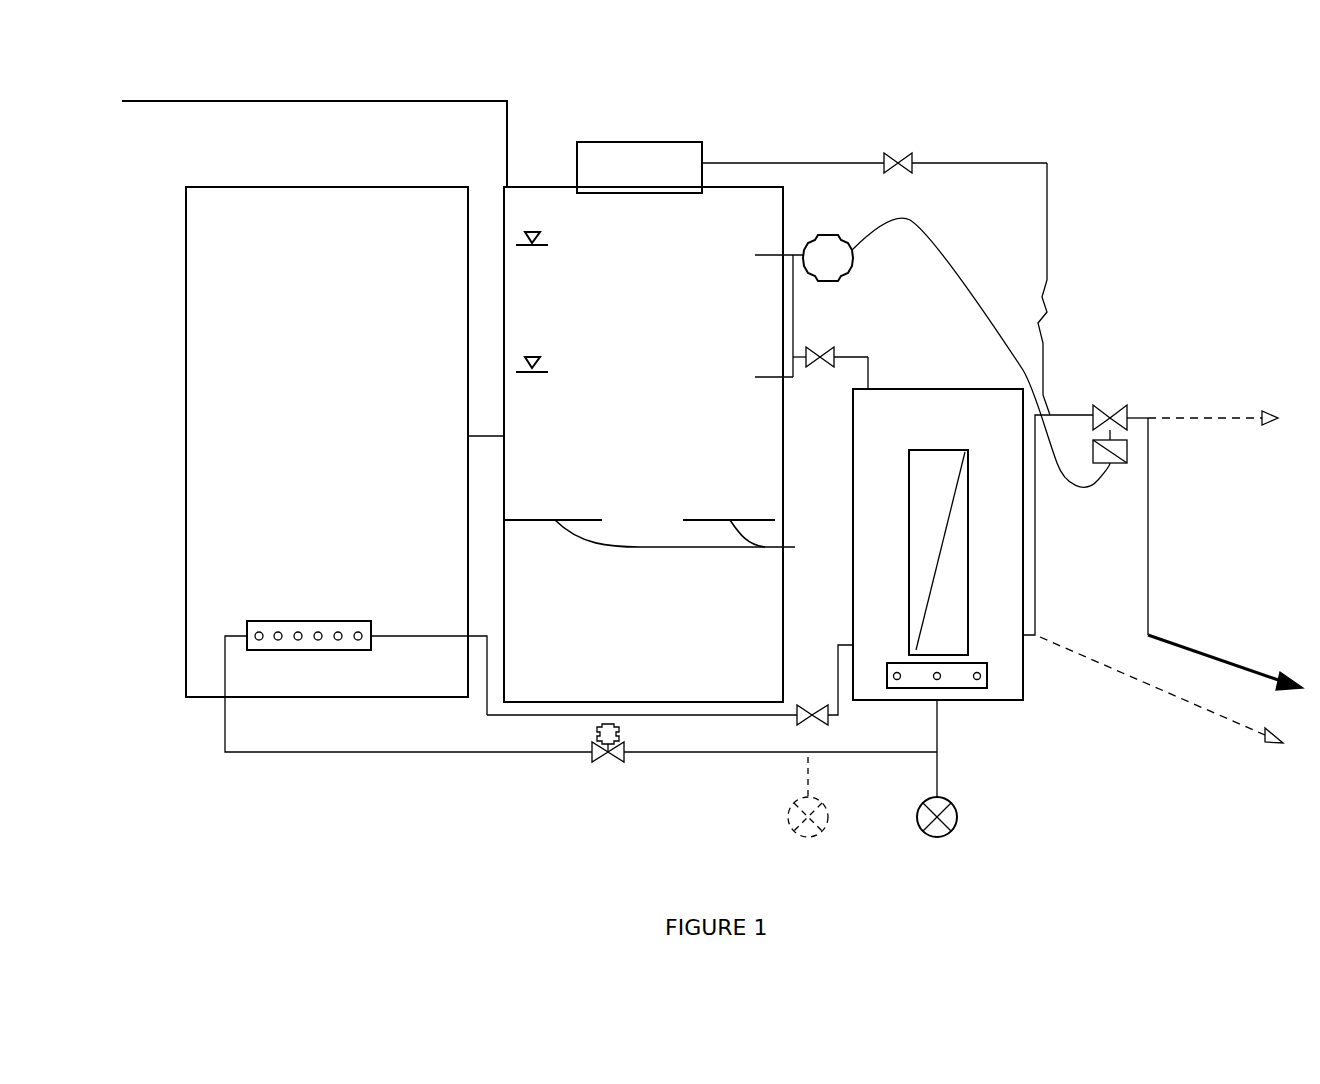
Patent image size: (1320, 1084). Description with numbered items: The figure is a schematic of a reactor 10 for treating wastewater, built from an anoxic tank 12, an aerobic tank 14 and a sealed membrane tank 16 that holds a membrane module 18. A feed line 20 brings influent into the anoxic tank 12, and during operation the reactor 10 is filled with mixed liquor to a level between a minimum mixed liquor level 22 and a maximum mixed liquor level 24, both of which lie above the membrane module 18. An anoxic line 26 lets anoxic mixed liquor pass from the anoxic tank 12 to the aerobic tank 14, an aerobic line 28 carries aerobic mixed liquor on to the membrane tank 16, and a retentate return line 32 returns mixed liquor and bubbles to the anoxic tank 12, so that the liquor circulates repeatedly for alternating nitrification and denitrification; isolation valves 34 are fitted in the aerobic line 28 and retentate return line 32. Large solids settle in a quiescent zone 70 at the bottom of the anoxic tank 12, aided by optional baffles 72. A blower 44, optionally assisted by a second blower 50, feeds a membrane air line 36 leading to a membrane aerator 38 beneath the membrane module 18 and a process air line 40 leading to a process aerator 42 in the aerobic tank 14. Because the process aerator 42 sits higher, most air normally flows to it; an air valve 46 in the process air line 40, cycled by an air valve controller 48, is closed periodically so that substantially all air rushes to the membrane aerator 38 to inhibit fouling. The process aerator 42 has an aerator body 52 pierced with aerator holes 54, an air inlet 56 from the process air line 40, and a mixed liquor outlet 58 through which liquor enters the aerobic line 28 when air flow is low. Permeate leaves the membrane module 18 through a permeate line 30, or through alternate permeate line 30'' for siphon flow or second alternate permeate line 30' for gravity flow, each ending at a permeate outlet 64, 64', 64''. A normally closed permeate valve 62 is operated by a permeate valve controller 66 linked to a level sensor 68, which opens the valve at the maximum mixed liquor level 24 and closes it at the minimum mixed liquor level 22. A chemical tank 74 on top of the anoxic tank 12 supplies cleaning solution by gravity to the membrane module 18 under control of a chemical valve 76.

The reactor 10 is at (218, 812).
The anoxic tank 12 is at (643, 444).
The aerobic tank 14 is at (327, 442).
The membrane tank 16 is at (938, 544).
The membrane module 18 is at (937, 450).
The feed line 20 is at (257, 94).
The minimum mixed liquor level 22 is at (521, 372).
The maximum mixed liquor level 24 is at (521, 245).
The anoxic line 26 is at (489, 434).
The aerobic line 28 is at (705, 716).
The permeate line 30 is at (1113, 510).
The second alternate permeate line 30' is at (1152, 696).
The alternate permeate line 30'' is at (1210, 394).
The retentate return line 32 is at (850, 356).
The isolation valves 34 is at (826, 370).
The membrane air line 36 is at (940, 725).
The membrane aerator 38 is at (990, 676).
The process air line 40 is at (410, 752).
The process aerator 42 is at (310, 650).
The blower 44 is at (955, 806).
The air valve 46 is at (616, 764).
The air valve controller 48 is at (632, 742).
The second blower 50 is at (828, 815).
The aerator body 52 is at (297, 621).
The aerator holes 54 is at (340, 650).
The air inlet 56 is at (247, 633).
The mixed liquor outlet 58 is at (373, 636).
The permeate valve 62 is at (1125, 408).
The permeate outlet 64 is at (1225, 652).
The permeate outlet 64' is at (1254, 759).
The permeate outlet 64'' is at (1263, 448).
The permeate valve controller 66 is at (1130, 456).
The level sensor 68 is at (826, 235).
The quiescent zone 70 is at (610, 617).
The baffles 72 is at (666, 543).
The chemical tank 74 is at (682, 142).
The chemical valve 76 is at (891, 153).